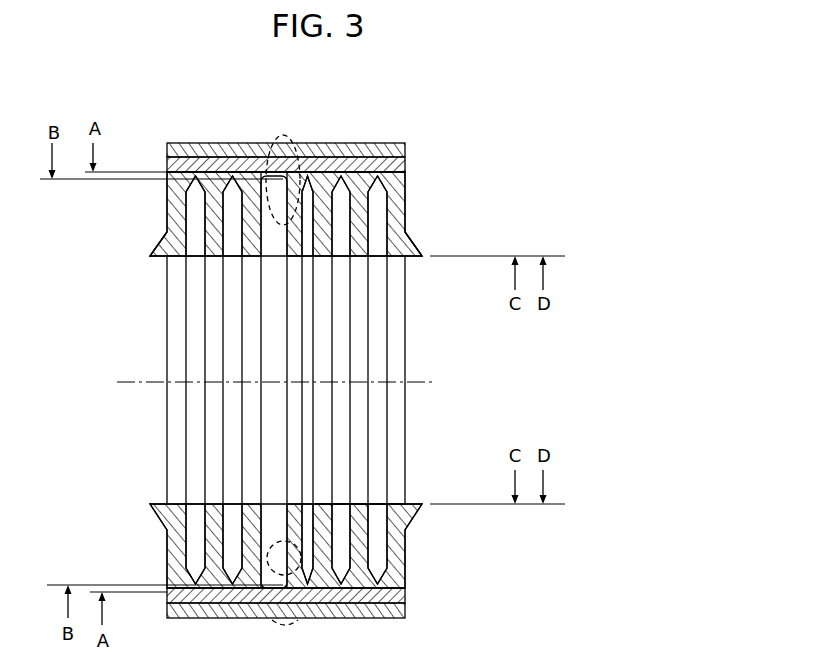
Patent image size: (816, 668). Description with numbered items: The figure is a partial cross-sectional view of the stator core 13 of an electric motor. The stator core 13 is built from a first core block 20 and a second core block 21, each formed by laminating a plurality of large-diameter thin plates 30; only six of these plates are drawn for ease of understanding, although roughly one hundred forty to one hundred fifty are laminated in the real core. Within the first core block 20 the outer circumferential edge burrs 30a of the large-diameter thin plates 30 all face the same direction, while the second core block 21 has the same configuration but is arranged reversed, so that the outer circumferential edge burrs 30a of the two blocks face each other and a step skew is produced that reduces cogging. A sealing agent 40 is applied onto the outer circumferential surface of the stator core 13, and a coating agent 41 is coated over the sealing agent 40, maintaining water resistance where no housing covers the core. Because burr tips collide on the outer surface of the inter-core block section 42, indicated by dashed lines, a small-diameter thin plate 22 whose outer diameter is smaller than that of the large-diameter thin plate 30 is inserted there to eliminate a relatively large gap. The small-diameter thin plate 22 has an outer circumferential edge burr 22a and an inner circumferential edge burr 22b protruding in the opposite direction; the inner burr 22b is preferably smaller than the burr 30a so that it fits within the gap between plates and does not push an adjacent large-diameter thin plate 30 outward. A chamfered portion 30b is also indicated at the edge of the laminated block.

The stator core 13 is at (444, 133).
The first core block 20 is at (280, 133).
The second core block 21 is at (293, 133).
The small-diameter thin plate 22 is at (285, 150).
The outer circumferential edge burr 22a is at (315, 550).
The inner circumferential edge burr 22b is at (335, 532).
The large-diameter thin plate 30 is at (407, 335).
The outer circumferential edge burr 30a is at (373, 177).
The chamfered portion 30b is at (405, 243).
The sealing agent 40 is at (405, 594).
The coating agent 41 is at (405, 608).
The inter-core block section 42 is at (272, 572).